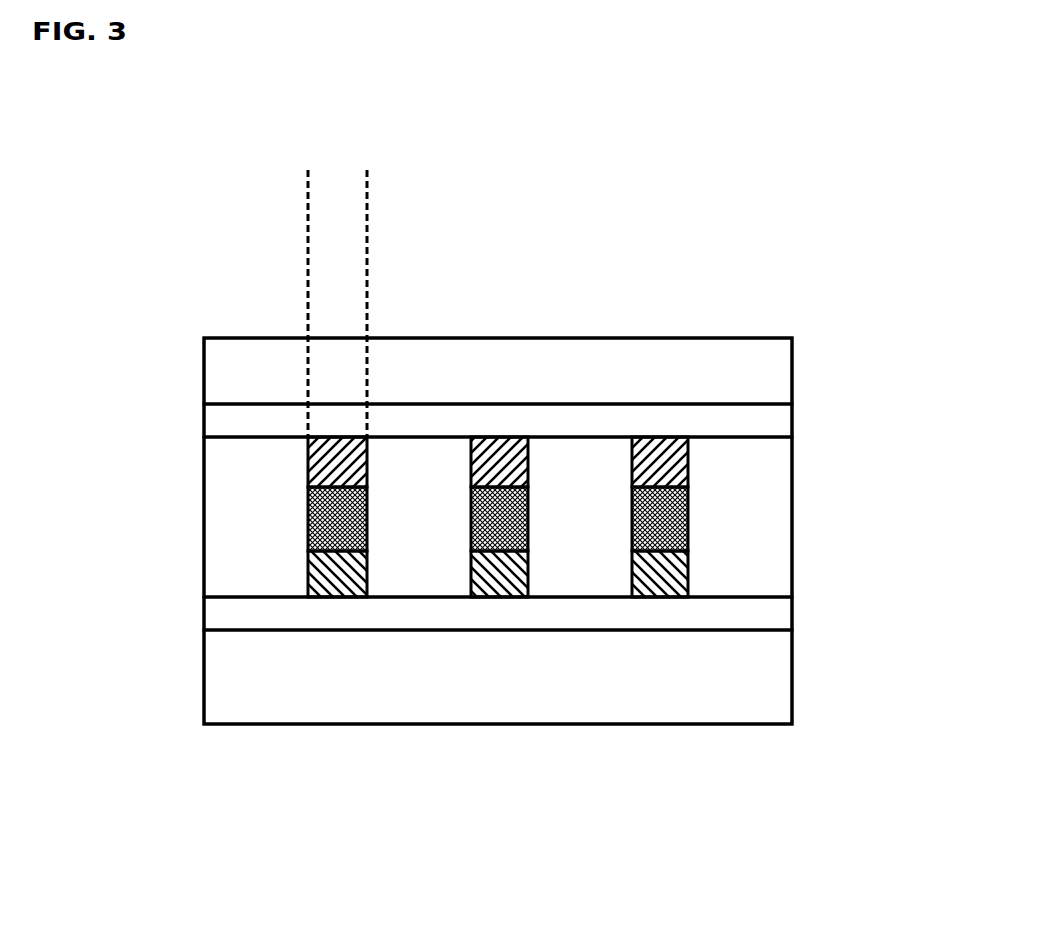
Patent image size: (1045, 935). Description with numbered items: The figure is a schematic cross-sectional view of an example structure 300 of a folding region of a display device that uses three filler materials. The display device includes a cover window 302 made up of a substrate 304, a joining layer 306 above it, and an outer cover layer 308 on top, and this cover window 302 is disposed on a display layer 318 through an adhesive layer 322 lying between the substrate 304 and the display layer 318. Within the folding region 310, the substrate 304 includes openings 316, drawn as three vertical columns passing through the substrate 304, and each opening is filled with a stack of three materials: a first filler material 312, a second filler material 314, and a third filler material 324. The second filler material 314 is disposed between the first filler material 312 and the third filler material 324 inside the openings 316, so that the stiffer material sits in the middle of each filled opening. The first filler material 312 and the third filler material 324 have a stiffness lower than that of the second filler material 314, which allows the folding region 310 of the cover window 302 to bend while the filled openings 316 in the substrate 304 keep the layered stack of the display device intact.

The structure 300 is at (774, 216).
The cover window 302 is at (818, 340).
The substrate 304 is at (228, 490).
The joining layer 306 is at (228, 421).
The outer cover layer 308 is at (228, 369).
The folding region 310 is at (203, 282).
The first filler material 312 is at (367, 463).
The second filler material 314 is at (350, 500).
The openings 316 is at (367, 176).
The display layer 318 is at (228, 682).
The adhesive layer 322 is at (228, 619).
The third filler material 324 is at (360, 570).